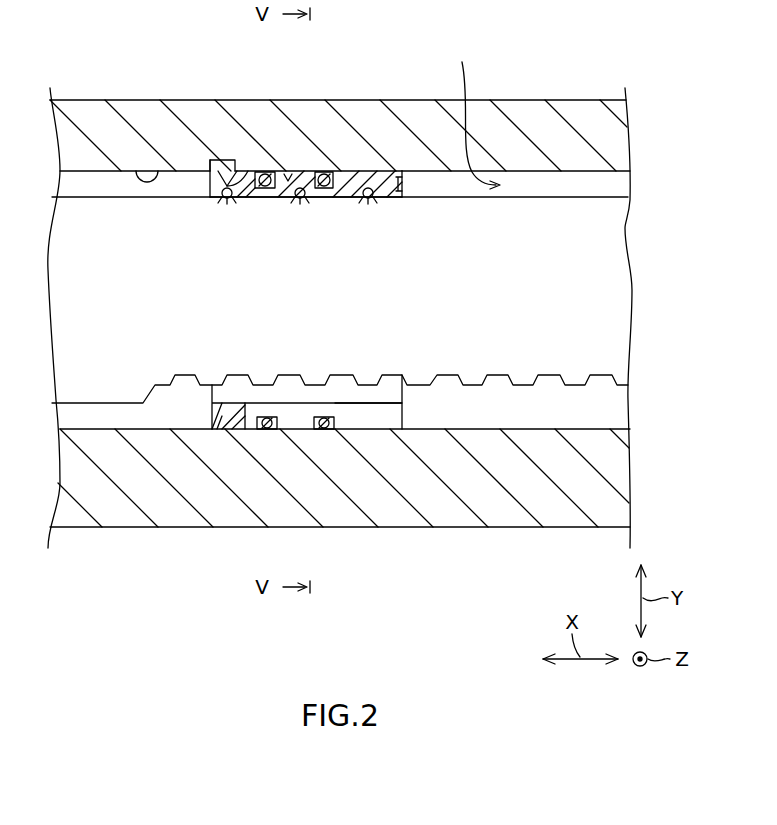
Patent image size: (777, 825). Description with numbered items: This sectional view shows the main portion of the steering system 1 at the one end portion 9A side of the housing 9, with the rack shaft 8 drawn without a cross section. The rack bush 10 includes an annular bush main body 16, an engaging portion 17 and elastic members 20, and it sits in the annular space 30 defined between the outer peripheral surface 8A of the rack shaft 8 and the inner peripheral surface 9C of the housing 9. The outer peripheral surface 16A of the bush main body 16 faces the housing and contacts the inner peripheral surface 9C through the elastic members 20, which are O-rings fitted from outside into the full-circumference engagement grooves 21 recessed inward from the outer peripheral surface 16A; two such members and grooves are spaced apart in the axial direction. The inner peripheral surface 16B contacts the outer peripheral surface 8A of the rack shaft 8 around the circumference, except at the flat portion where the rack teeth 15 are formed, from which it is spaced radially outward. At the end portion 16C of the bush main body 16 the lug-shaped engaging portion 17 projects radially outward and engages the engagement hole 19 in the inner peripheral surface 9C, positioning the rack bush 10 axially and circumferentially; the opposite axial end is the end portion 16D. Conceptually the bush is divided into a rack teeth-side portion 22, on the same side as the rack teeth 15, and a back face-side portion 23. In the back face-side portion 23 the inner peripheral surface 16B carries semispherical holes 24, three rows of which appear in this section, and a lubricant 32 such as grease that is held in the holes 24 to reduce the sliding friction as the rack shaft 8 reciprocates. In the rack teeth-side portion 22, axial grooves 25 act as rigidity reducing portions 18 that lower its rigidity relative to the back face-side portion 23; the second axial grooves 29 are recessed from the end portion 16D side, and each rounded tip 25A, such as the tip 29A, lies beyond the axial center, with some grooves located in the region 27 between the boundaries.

The steering system 1 is at (332, 633).
The rack shaft 8 is at (612, 271).
The outer peripheral surface of the rack shaft 8A is at (607, 236).
The housing 9 is at (580, 115).
The one end portion of the housing 9A is at (525, 108).
The inner peripheral surface of the housing 9C is at (134, 172).
The rack bush 10 is at (288, 174).
The rack teeth 15 is at (575, 383).
The bush main body 16 is at (291, 167).
The outer peripheral surface of the bush main body 16A is at (301, 171).
The inner peripheral surface of the bush main body 16B is at (262, 199).
The end portion of the bush main body 16C is at (210, 198).
The end portion of the bush main body opposite to end portion 16C 16D is at (408, 172).
The engaging portion 17 is at (227, 160).
The rigidity reducing portions 18 is at (357, 413).
The engagement hole 19 is at (250, 171).
The elastic members 20 is at (267, 430).
The engagement grooves 21 is at (266, 171).
The rack teeth-side portion 22 is at (395, 418).
The back face-side portion 23 is at (400, 196).
The holes 24 is at (225, 200).
The axial grooves 25 is at (357, 373).
The tip of the axial groove 25A is at (267, 414).
The region other than boundaries 27 is at (217, 414).
The second axial grooves 29 is at (357, 373).
The tip of the second axial groove 29A is at (297, 378).
The space 30 is at (476, 113).
The lubricant 32 is at (233, 199).